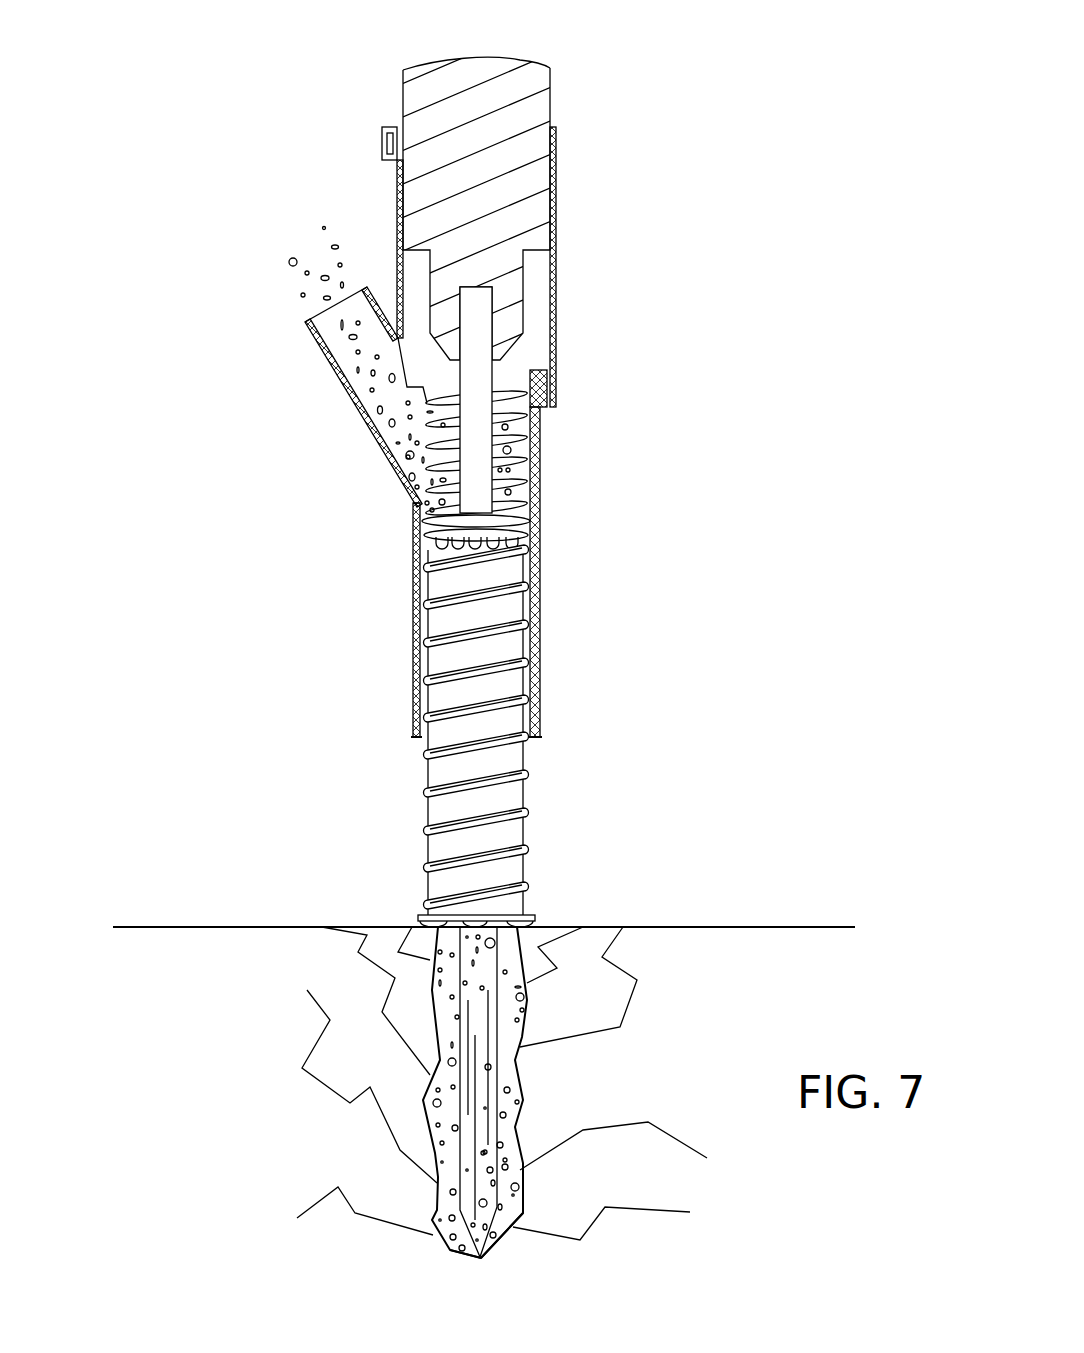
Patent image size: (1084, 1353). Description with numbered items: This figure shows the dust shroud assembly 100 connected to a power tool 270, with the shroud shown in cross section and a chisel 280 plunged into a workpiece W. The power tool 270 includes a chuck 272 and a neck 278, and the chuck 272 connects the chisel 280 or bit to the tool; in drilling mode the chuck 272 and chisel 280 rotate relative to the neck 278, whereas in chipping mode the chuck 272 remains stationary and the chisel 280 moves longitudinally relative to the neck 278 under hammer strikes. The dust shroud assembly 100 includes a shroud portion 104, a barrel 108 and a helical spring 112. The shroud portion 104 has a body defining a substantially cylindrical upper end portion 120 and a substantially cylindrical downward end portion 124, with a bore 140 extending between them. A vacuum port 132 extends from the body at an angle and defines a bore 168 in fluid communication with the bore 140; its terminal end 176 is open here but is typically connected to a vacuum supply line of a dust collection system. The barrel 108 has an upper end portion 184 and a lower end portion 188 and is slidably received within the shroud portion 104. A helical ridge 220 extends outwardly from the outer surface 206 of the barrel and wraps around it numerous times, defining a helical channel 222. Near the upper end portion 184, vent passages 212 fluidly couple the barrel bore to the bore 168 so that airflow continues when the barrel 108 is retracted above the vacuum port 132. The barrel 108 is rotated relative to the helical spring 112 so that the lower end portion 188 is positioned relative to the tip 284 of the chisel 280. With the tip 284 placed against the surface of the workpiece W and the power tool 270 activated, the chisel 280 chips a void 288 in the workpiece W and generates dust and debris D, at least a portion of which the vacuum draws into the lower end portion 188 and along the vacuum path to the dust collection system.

The dust shroud assembly 100 is at (797, 214).
The shroud portion 104 is at (413, 568).
The barrel 108 is at (450, 767).
The helical spring 112 is at (533, 423).
The upper end portion 120 is at (553, 125).
The downward end portion 124 is at (413, 730).
The vacuum port 132 is at (320, 352).
The bore 140 is at (413, 268).
The bore 168 is at (382, 392).
The terminal end 176 is at (308, 317).
The upper end portion 184 is at (413, 498).
The lower end portion 188 is at (532, 912).
The outer surface 206 is at (523, 758).
The vent passage 212 is at (533, 537).
The helical ridge 220 is at (505, 810).
The helical channel 222 is at (442, 842).
The power tool 270 is at (483, 103).
The chuck 272 is at (525, 305).
The neck 278 is at (440, 148).
The chisel 280 is at (475, 322).
The tip 284 is at (480, 1260).
The void 288 is at (443, 998).
The dust and debris D is at (313, 257).
The workpiece W is at (715, 925).